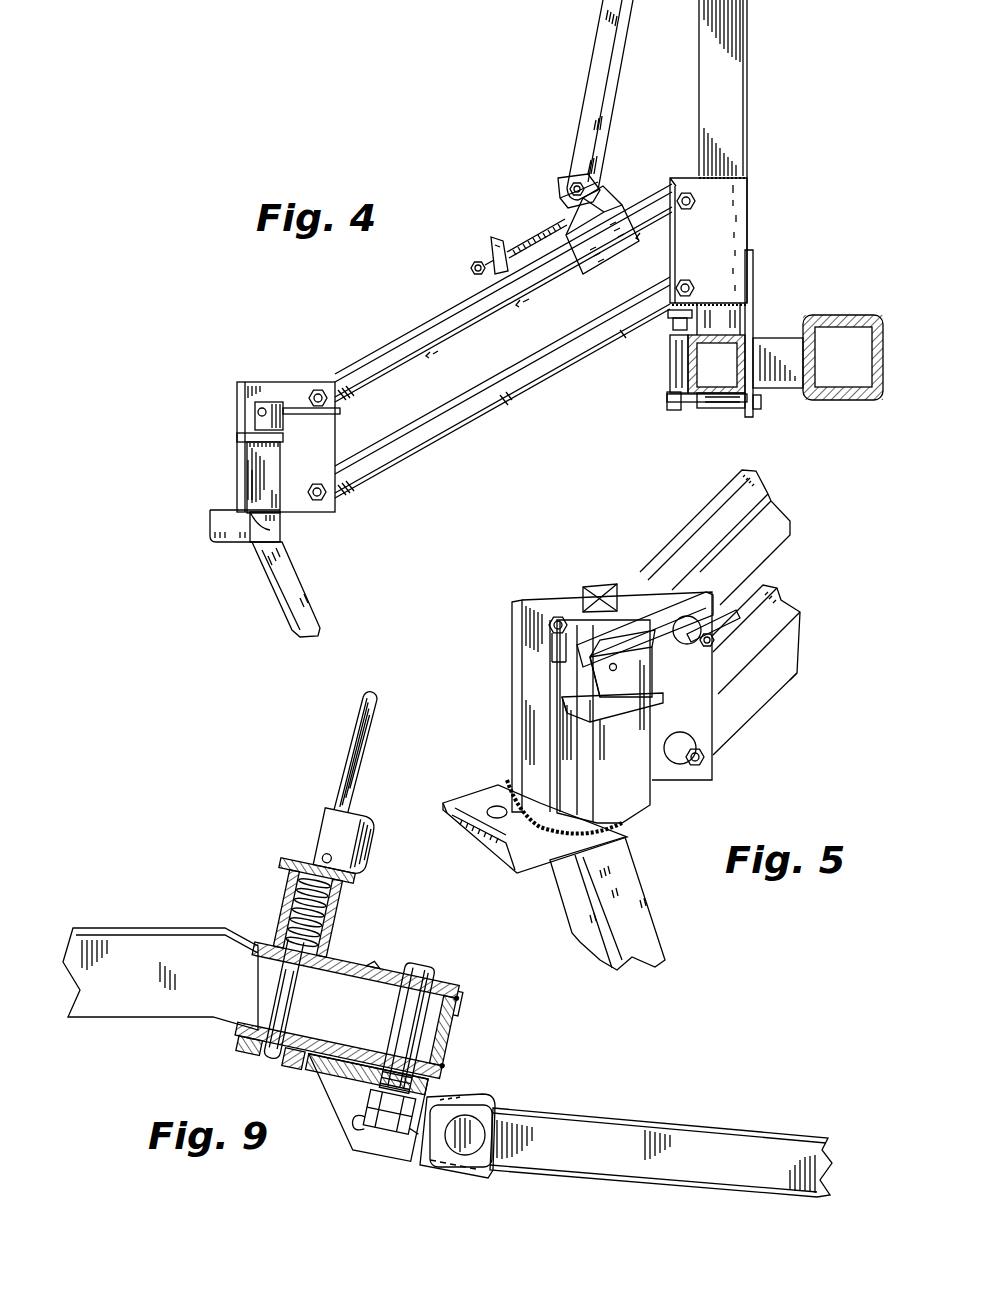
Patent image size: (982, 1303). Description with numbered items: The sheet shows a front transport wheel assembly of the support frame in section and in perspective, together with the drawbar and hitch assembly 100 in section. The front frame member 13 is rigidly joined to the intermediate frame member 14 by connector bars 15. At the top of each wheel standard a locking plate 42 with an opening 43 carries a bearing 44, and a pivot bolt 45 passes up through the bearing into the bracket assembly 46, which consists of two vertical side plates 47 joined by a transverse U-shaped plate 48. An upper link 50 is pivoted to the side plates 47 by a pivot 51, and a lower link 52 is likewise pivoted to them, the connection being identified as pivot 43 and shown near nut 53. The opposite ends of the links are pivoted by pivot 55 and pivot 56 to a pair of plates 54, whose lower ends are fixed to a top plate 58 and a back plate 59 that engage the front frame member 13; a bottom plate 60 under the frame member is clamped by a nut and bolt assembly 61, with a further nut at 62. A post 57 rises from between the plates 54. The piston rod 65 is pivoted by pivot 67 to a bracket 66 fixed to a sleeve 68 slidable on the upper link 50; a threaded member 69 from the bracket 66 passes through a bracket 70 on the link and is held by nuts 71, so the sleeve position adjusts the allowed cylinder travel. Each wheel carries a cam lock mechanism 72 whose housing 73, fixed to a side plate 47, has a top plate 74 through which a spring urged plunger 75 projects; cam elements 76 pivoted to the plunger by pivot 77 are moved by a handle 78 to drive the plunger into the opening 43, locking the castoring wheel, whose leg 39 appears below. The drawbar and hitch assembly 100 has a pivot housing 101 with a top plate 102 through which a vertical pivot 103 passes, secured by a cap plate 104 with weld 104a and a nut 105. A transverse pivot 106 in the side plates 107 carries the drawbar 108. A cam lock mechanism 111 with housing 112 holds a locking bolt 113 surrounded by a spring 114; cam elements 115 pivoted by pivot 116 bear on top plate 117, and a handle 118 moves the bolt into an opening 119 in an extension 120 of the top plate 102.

In FIG. 4, the front frame member 13 is at (668, 397).
In FIG. 9, the front frame member 13 is at (158, 927).
In FIG. 4, the intermediate frame member 14 is at (882, 328).
In FIG. 4, the connector bars 15 is at (784, 340).
In FIG. 4, the leg 39 is at (276, 585).
In FIG. 5, the leg 39 is at (645, 920).
In FIG. 4, the locking plate 42 is at (210, 525).
In FIG. 5, the locking plate 42 is at (505, 861).
In FIG. 5, the opening 43 is at (495, 805).
In FIG. 4, the bearing 44 is at (283, 525).
In FIG. 5, the pivot bolt 45 is at (560, 617).
In FIG. 4, the bracket assembly 46 is at (232, 378).
In FIG. 5, the bracket assembly 46 is at (500, 600).
In FIG. 4, the side plates 47 is at (264, 380).
In FIG. 5, the side plates 47 is at (511, 634).
In FIG. 5, the U-shaped plate 48 is at (613, 590).
In FIG. 4, the upper link 50 is at (445, 320).
In FIG. 5, the upper link 50 is at (727, 492).
In FIG. 4, the pivot 51 is at (318, 389).
In FIG. 4, the lower link 52 is at (553, 372).
In FIG. 5, the lower link 52 is at (780, 670).
In FIG. 4, the nut 53 is at (326, 494).
In FIG. 4, the plates 54 is at (745, 222).
In FIG. 4, the pivot 55 is at (680, 197).
In FIG. 5, the pivot 55 is at (716, 640).
In FIG. 4, the pivot 56 is at (677, 283).
In FIG. 5, the pivot 56 is at (708, 757).
In FIG. 4, the post 57 is at (749, 55).
In FIG. 4, the top plate 58 is at (688, 337).
In FIG. 4, the back plate 59 is at (754, 290).
In FIG. 4, the bottom plate 60 is at (722, 410).
In FIG. 4, the nut and bolt assembly 61 is at (672, 372).
In FIG. 4, the block 62 is at (762, 404).
In FIG. 4, the piston rod 65 is at (602, 22).
In FIG. 4, the bracket 66 is at (562, 192).
In FIG. 4, the pivot 67 is at (583, 186).
In FIG. 4, the sleeve 68 is at (610, 250).
In FIG. 4, the threaded member 69 is at (522, 240).
In FIG. 4, the bracket 70 is at (487, 294).
In FIG. 4, the nuts 71 is at (512, 240).
In FIG. 4, the cam lock mechanism 72 is at (226, 457).
In FIG. 4, the housing 73 is at (247, 481).
In FIG. 5, the housing 73 is at (640, 793).
In FIG. 4, the top plate 74 is at (290, 437).
In FIG. 5, the plunger 75 is at (622, 638).
In FIG. 4, the cam elements 76 is at (255, 420).
In FIG. 5, the cam elements 76 is at (590, 690).
In FIG. 4, the pivot 77 is at (258, 410).
In FIG. 4, the handle 78 is at (341, 411).
In FIG. 5, the handle 78 is at (742, 614).
In FIG. 9, the drawbar and hitch assembly 100 is at (772, 1110).
In FIG. 9, the pivot housing 101 is at (340, 1160).
In FIG. 9, the top plate 102 is at (326, 1062).
In FIG. 9, the vertical pivot 103 is at (402, 1017).
In FIG. 9, the cap plate 104 is at (448, 985).
In FIG. 9, the weld 104a is at (375, 968).
In FIG. 9, the nut 105 is at (362, 1108).
In FIG. 9, the transverse pivot 106 is at (465, 1156).
In FIG. 9, the side plates 107 is at (478, 1094).
In FIG. 9, the drawbar 108 is at (778, 1188).
In FIG. 9, the cam lock mechanism 111 is at (250, 826).
In FIG. 9, the housing 112 is at (292, 878).
In FIG. 9, the locking bolt 113 is at (294, 988).
In FIG. 9, the spring 114 is at (300, 905).
In FIG. 9, the cam elements 115 is at (336, 814).
In FIG. 9, the pivot 116 is at (325, 856).
In FIG. 9, the top plate 117 is at (356, 882).
In FIG. 9, the handle 118 is at (364, 696).
In FIG. 9, the opening 119 is at (288, 1062).
In FIG. 9, the extension 120 is at (248, 1040).